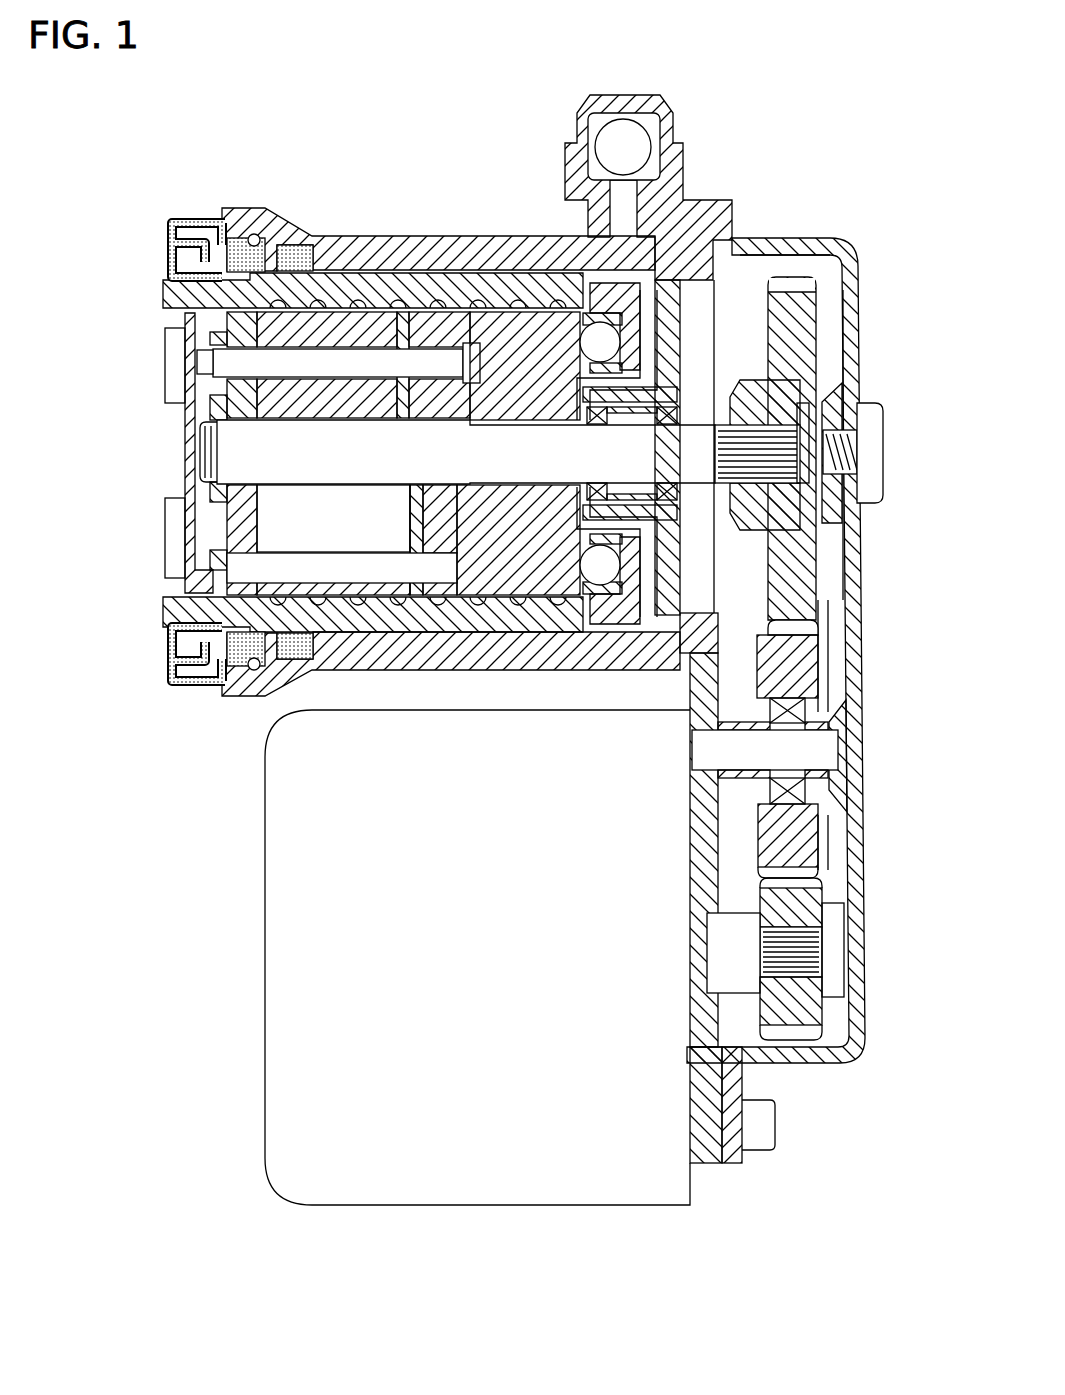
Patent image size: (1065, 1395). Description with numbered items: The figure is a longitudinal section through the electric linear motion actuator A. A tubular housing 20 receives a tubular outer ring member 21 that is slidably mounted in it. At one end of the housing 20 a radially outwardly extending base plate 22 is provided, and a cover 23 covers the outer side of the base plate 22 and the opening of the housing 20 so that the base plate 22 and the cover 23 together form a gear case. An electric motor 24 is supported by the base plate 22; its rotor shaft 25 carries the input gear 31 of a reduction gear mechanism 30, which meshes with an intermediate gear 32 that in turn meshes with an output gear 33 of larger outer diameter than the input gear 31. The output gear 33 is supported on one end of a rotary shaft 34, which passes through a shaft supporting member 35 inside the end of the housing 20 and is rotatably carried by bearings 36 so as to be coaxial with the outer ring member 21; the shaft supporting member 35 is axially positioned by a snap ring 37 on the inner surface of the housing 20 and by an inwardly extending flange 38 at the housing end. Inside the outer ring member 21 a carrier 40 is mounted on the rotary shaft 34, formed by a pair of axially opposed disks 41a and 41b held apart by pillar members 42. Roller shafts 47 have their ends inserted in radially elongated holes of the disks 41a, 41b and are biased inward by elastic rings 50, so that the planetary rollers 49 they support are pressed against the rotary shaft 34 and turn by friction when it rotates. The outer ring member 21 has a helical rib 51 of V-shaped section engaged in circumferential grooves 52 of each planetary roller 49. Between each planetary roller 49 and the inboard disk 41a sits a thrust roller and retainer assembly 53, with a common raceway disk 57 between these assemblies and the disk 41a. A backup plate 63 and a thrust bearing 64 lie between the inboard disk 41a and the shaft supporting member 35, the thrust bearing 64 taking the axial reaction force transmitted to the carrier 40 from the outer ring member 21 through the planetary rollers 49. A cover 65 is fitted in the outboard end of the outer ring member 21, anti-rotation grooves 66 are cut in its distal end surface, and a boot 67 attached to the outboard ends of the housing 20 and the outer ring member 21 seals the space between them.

The housing 20 is at (440, 250).
The outer ring member 21 is at (480, 275).
The base plate 22 is at (690, 808).
The cover 23 is at (838, 252).
The electric motor 24 is at (267, 780).
The rotor shaft 25 is at (750, 927).
The reduction gear mechanism 30 is at (825, 838).
The input gear 31 is at (813, 1012).
The intermediate gear 32 is at (808, 658).
The output gear 33 is at (842, 358).
The rotary shaft 34 is at (222, 433).
The shaft supporting member 35 is at (700, 338).
The bearings 36 is at (658, 427).
The snap ring 37 is at (703, 272).
The flange 38 is at (737, 242).
The carrier 40 is at (218, 323).
The disk 41a is at (408, 502).
The disk 41b is at (248, 532).
The pillar members 42 is at (243, 572).
The roller shafts 47 is at (340, 360).
The planetary rollers 49 is at (305, 305).
The elastic rings 50 is at (203, 353).
The helical rib 51 is at (375, 300).
The circumferential grooves 52 is at (303, 432).
The thrust roller and retainer assembly 53 is at (396, 430).
The common raceway disk 57 is at (440, 430).
The backup plate 63 is at (500, 580).
The thrust bearing 64 is at (585, 627).
The cover 65 is at (185, 473).
The anti-rotation grooves 66 is at (170, 530).
The boot 67 is at (176, 220).
The electric linear motion actuator A is at (533, 240).